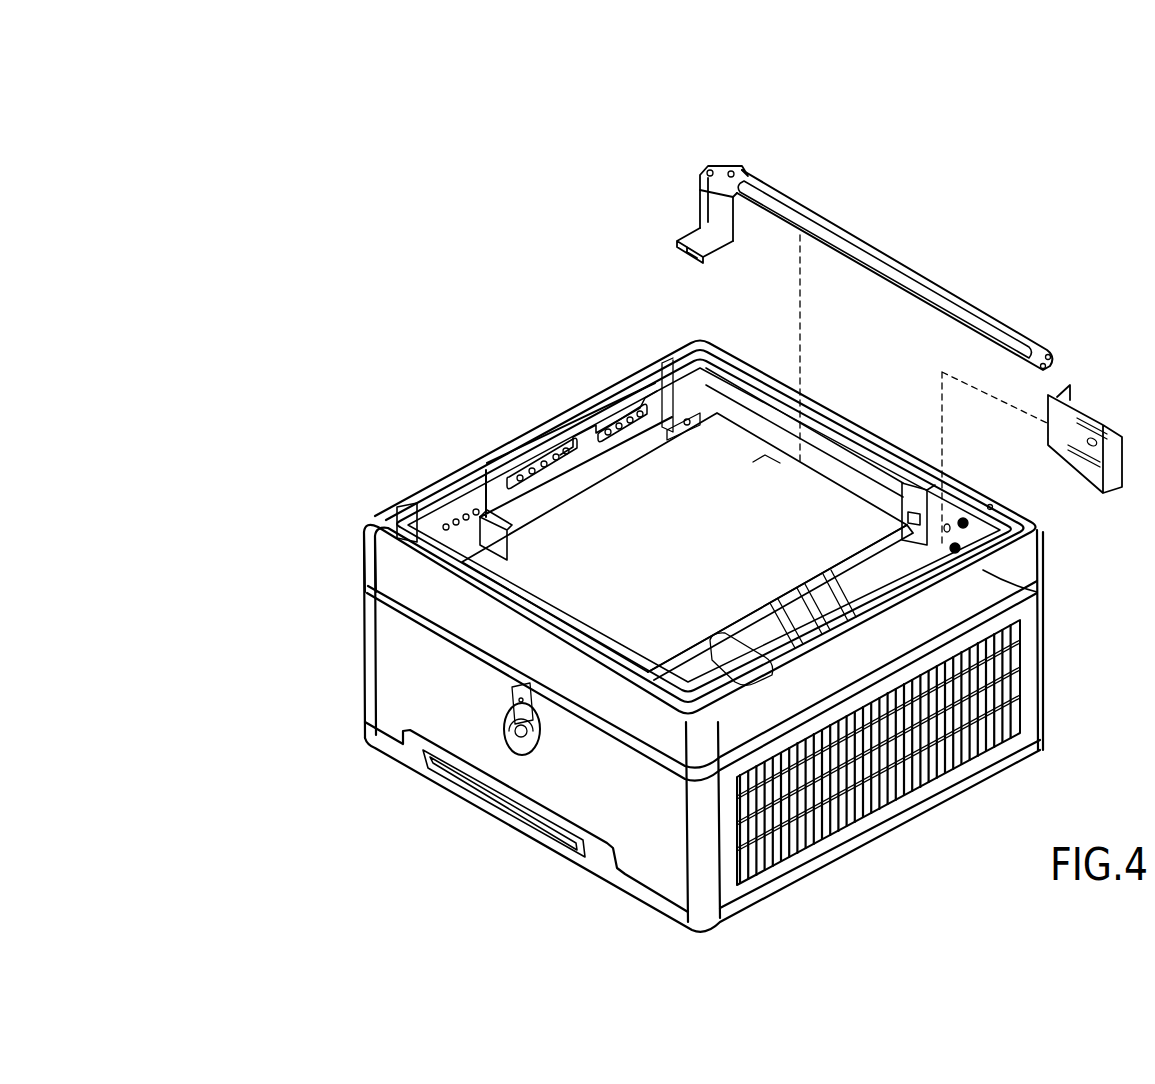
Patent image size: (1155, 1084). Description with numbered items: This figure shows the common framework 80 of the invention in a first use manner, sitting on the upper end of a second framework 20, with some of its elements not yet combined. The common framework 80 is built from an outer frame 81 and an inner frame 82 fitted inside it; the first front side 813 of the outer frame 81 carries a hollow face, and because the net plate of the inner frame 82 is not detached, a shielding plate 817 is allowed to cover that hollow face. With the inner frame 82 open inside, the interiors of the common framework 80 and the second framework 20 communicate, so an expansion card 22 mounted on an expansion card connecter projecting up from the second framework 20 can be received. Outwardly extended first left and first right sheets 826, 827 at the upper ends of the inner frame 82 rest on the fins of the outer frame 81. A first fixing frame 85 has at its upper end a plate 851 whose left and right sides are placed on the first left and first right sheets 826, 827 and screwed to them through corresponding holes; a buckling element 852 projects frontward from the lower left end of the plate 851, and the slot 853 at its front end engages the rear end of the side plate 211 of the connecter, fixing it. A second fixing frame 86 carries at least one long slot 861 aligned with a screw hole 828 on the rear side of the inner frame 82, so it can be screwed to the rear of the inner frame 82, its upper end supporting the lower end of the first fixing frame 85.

The second framework 20 is at (1040, 695).
The expansion card 22 is at (488, 505).
The side plate 211 is at (620, 430).
The common framework 80 is at (560, 388).
The outer frame 81 is at (1040, 568).
The inner frame 82 is at (767, 380).
The first fixing frame 85 is at (863, 229).
The second fixing frame 86 is at (1107, 417).
The first front side 813 is at (380, 557).
The shielding plate 817 is at (440, 603).
The first left sheet 826 is at (637, 380).
The first right sheet 827 is at (1037, 593).
The screw hole 828 is at (957, 547).
The plate 851 is at (739, 170).
The buckling element 852 is at (700, 222).
The slot 853 is at (700, 240).
The long slot 861 is at (1077, 450).